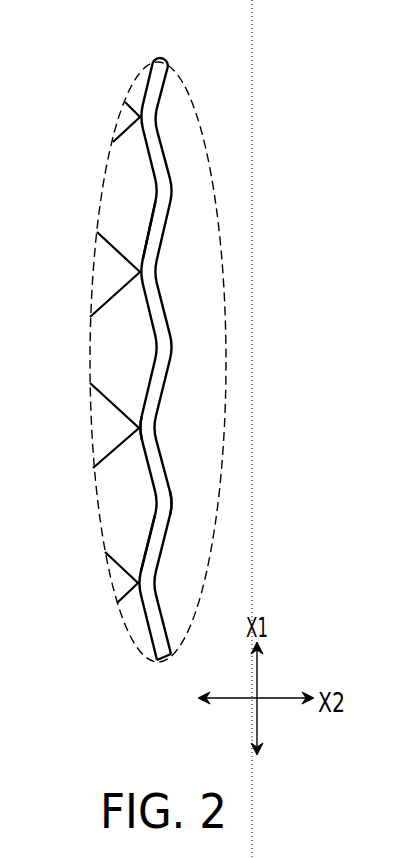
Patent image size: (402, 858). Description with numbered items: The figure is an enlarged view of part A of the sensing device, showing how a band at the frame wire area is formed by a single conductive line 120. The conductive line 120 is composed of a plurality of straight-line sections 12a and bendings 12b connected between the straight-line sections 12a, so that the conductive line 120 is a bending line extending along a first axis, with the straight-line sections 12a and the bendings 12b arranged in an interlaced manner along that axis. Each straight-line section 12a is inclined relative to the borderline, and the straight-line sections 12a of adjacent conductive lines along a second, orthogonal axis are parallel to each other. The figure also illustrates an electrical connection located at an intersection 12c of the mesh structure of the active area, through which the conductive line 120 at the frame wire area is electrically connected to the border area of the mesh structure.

The part A is at (190, 90).
The conductive line 120 is at (158, 397).
The straight-line section 12a is at (164, 462).
The bending 12b is at (173, 505).
The intersection 12c is at (138, 428).